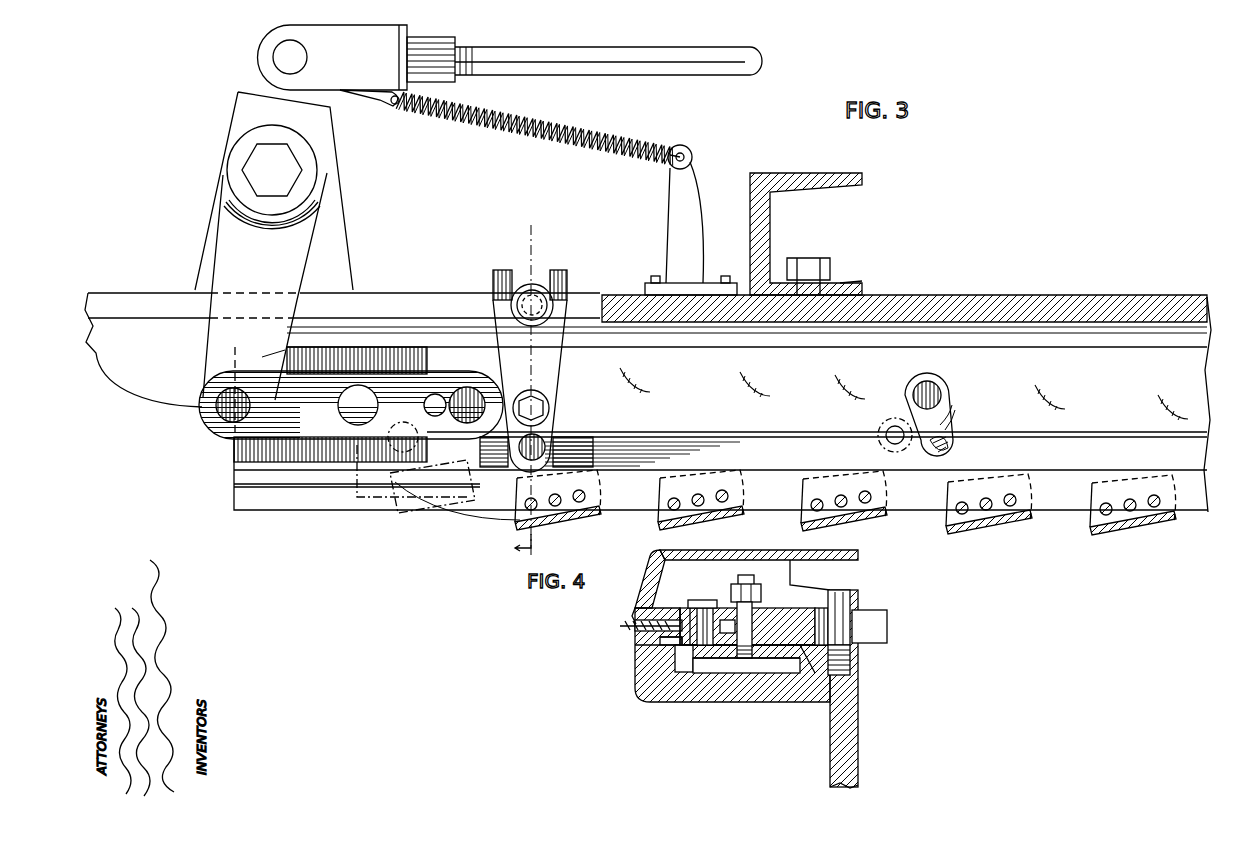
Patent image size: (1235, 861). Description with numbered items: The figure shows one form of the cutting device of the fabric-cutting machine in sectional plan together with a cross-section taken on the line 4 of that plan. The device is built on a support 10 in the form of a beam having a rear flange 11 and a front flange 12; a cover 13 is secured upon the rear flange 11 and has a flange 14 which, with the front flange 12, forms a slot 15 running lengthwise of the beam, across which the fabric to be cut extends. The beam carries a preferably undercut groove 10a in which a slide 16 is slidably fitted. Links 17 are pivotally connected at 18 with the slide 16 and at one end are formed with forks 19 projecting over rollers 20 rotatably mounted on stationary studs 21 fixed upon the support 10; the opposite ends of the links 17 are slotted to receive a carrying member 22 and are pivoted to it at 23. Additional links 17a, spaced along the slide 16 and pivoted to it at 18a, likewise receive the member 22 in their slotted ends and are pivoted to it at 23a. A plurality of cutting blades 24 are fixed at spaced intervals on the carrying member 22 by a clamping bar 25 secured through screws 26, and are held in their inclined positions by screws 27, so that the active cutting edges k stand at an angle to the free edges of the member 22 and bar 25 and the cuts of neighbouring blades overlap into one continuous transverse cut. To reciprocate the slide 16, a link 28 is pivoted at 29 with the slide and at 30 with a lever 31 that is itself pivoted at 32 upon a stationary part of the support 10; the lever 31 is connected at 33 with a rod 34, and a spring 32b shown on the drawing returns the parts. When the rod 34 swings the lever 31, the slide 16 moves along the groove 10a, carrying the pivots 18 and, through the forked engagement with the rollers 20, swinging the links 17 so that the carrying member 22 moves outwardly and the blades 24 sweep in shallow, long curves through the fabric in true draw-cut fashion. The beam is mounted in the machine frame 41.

In FIG. 3, the section line 4— 4 is at (511, 383).
In FIG. 3, the support 10 is at (137, 363).
In FIG. 4, the support 10 is at (680, 703).
In FIG. 3, the undercut groove 10a is at (372, 356).
In FIG. 4, the undercut groove 10a is at (800, 672).
In FIG. 3, the rear flange 11 is at (1011, 300).
In FIG. 4, the rear flange 11 is at (856, 575).
In FIG. 4, the front flange 12 is at (645, 641).
In FIG. 3, the cover 13 is at (714, 557).
In FIG. 4, the cover 13 is at (759, 555).
In FIG. 3, the flange 14 is at (655, 567).
In FIG. 4, the flange 14 is at (650, 579).
In FIG. 3, the slot 15 is at (350, 512).
In FIG. 4, the slot 15 is at (636, 607).
In FIG. 3, the slide 16 is at (792, 387).
In FIG. 4, the slide 16 is at (718, 665).
In FIG. 3, the links 17 is at (560, 362).
In FIG. 4, the links 17 is at (795, 616).
In FIG. 3, the additional links 17a is at (896, 420).
In FIG. 3, the pivot 18 is at (541, 404).
In FIG. 4, the pivot 18 is at (760, 601).
In FIG. 3, the pivot 18a is at (941, 398).
In FIG. 3, the forks 19 is at (552, 283).
In FIG. 4, the forks 19 is at (887, 645).
In FIG. 3, the rollers 20 is at (532, 303).
In FIG. 4, the rollers 20 is at (860, 650).
In FIG. 3, the stationary studs 21 is at (566, 290).
In FIG. 4, the stationary studs 21 is at (858, 623).
In FIG. 3, the carrying member 22 is at (702, 440).
In FIG. 4, the carrying member 22 is at (648, 662).
In FIG. 3, the pivot 23 is at (546, 446).
In FIG. 4, the pivot 23 is at (706, 606).
In FIG. 3, the pivot 23a is at (955, 441).
In FIG. 3, the cutting blades 24 is at (582, 517).
In FIG. 4, the cutting blades 24 is at (630, 628).
In FIG. 3, the clamping bar 25 is at (775, 509).
In FIG. 4, the clamping bar 25 is at (668, 618).
In FIG. 3, the screws 26 is at (843, 498).
In FIG. 3, the screws 27 is at (1010, 498).
In FIG. 3, the link 28 is at (298, 432).
In FIG. 3, the pivot 29 is at (468, 397).
In FIG. 3, the pivot 30 is at (224, 412).
In FIG. 3, the lever 31 is at (326, 120).
In FIG. 3, the pivot 32 is at (258, 167).
In FIG. 3, the spring 32b is at (566, 193).
In FIG. 3, the connection 33 is at (285, 48).
In FIG. 3, the rod 34 is at (645, 66).
In FIG. 3, the frame 41 is at (766, 221).
In FIG. 3, the active cutting edges k is at (1140, 530).